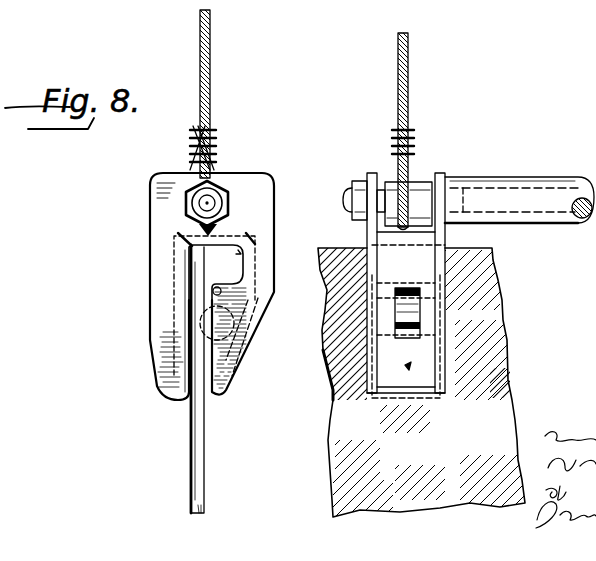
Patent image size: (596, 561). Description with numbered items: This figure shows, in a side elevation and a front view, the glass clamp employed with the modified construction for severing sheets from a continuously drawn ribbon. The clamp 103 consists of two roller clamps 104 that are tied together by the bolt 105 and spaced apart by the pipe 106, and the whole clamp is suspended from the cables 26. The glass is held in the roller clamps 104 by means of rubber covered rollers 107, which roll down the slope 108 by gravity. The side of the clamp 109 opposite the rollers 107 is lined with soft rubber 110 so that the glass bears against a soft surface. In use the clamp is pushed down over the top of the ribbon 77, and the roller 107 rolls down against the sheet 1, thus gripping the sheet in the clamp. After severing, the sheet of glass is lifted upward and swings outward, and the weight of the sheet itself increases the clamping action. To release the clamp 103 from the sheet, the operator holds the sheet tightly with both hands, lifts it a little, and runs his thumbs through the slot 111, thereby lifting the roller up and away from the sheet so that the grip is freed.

The sheet 1 is at (195, 464).
The cables 26 is at (210, 70).
The ribbon 77 is at (208, 244).
The clamp 103 is at (277, 248).
The roller clamps 104 is at (160, 222).
The bolt 105 is at (155, 192).
The pipe 106 is at (545, 178).
The rubber covered rollers 107 is at (397, 325).
The slope 108 is at (235, 380).
The side of the clamp 109 is at (174, 322).
The soft rubber 110 is at (187, 277).
The slot 111 is at (403, 297).